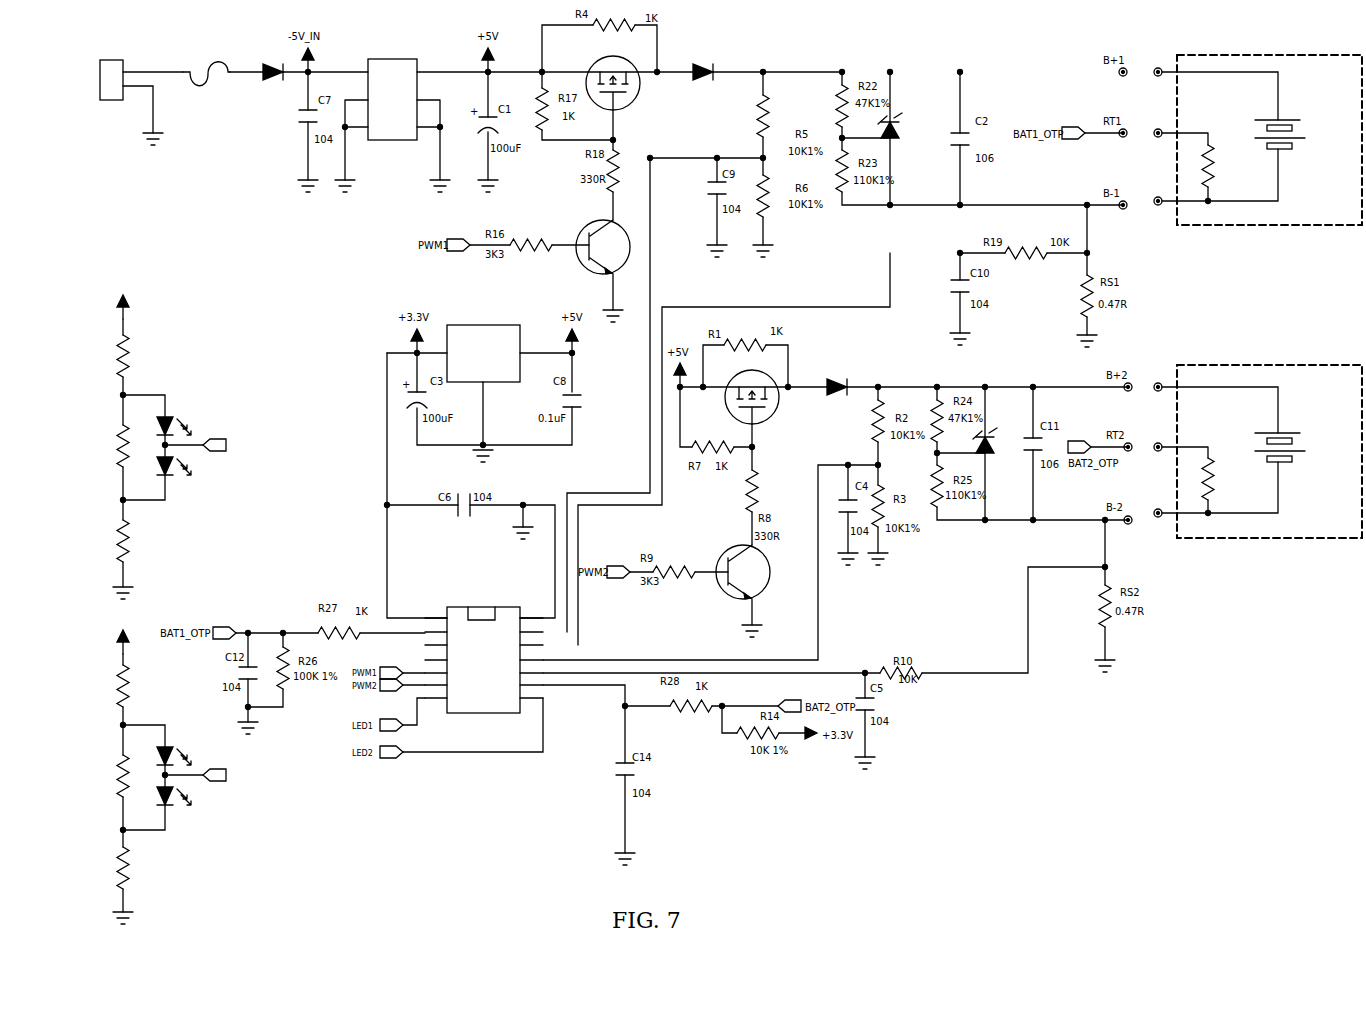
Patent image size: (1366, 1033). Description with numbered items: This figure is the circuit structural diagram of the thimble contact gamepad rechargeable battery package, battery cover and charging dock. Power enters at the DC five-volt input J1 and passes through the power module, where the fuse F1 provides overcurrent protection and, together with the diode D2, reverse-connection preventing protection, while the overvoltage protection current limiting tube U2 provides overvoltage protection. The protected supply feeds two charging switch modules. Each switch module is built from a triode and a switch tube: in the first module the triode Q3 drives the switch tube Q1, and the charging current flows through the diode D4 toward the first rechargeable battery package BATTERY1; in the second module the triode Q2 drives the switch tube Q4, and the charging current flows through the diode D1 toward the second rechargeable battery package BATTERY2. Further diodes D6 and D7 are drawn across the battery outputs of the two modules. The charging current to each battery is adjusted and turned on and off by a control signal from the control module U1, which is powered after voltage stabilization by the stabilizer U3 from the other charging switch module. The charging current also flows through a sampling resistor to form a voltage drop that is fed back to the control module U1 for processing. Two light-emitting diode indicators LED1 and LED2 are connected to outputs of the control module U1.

The DC 5V input J1 is at (141, 105).
The fuse F1 is at (223, 69).
The diode IN5819 D2 is at (309, 67).
The overvoltage protection current limiting tube WS3202E U2 is at (392, 114).
The switch tube SI2301 Q1 is at (604, 98).
The triode 8050 Q3 is at (589, 271).
The diode IN5819 D4 is at (749, 75).
The shunt regulator CJ431 charger 1 D6 is at (905, 138).
The rechargeable battery package BATTERY1 is at (1251, 155).
The ME6209 voltage stabilizer U3 is at (483, 346).
The control module HJM1691A U1 is at (491, 664).
The switch tube SI2301 Q4 is at (769, 408).
The triode 8050 Q2 is at (751, 591).
The diode IN5819 D1 is at (973, 369).
The shunt regulator CJ431 charger 2 D7 is at (1001, 453).
The rechargeable battery package BATTERY2 is at (1250, 466).
The indicator LED 1 LED1 is at (172, 438).
The indicator LED 2 LED2 is at (172, 768).